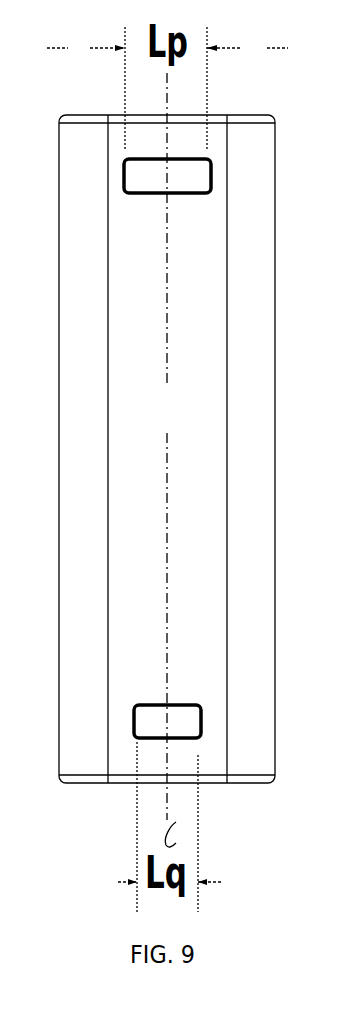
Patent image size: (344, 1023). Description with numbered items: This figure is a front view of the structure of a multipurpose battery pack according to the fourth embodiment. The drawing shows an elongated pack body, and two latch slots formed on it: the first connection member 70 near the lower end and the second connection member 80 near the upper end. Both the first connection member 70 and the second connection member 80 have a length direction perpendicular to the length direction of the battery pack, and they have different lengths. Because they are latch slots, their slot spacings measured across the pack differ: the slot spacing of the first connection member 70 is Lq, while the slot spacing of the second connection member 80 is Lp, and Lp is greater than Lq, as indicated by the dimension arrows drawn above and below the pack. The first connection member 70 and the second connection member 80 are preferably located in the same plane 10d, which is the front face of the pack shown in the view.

The plane 10d is at (193, 427).
The second connection member 80 is at (183, 166).
The first connection member 70 is at (153, 729).